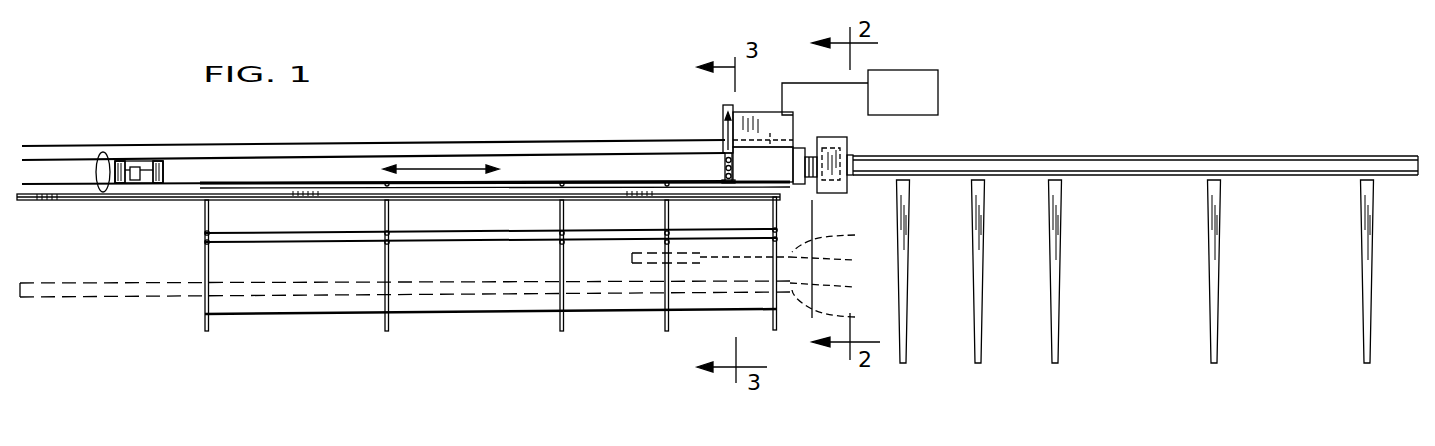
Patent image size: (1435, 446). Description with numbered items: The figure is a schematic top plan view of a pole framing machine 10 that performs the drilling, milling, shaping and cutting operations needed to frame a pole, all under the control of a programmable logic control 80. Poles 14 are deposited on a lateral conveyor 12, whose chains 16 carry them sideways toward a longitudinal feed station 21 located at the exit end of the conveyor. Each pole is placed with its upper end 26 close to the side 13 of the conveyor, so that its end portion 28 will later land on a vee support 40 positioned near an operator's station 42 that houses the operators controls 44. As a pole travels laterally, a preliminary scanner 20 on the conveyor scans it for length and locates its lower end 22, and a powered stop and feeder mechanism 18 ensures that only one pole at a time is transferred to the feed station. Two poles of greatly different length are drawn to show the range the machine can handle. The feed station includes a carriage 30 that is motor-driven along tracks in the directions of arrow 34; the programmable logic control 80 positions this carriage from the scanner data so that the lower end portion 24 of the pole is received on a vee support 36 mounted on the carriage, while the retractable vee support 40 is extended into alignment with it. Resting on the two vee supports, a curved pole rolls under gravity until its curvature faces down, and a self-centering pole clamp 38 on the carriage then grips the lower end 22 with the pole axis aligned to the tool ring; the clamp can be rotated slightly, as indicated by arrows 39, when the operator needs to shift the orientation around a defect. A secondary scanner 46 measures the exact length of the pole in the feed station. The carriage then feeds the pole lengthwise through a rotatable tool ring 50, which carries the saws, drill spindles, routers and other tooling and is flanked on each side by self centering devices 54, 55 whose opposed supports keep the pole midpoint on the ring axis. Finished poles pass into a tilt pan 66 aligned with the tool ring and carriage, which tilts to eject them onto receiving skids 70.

The pole framing machine 10 is at (450, 368).
The lateral conveyor 12 is at (528, 313).
The side of the conveyor 13 is at (812, 210).
The pole 14 is at (430, 293).
The chains 16 is at (385, 265).
The stop and feeder mechanism 18 is at (582, 186).
The preliminary scanner 20 is at (87, 203).
The longitudinal feed station 21 is at (378, 130).
The lower end of the pole 22 is at (632, 257).
The lower end portion of the pole 24 is at (88, 298).
The upper end of the pole 26 is at (793, 273).
The end portion of the pole 28 is at (839, 277).
The carriage 30 is at (140, 163).
The arrow 34 is at (435, 168).
The vee support 36 is at (160, 183).
The pole clamp 38 is at (128, 176).
The arrows 39 is at (95, 172).
The vee support 40 is at (725, 150).
The operator's station 42 is at (798, 112).
The operators controls 44 is at (778, 132).
The secondary scanner 46 is at (800, 185).
The rotatable tool ring 50 is at (830, 137).
The self centering device 54 is at (803, 162).
The self centering device 55 is at (847, 153).
The tilt pan 66 is at (1110, 155).
The receiving skids 70 is at (1210, 317).
The programmable logic control 80 is at (917, 105).